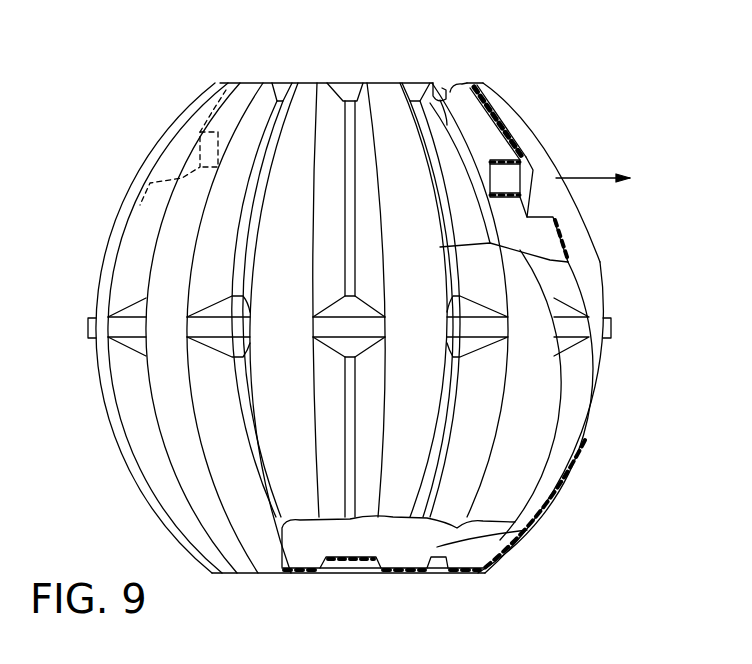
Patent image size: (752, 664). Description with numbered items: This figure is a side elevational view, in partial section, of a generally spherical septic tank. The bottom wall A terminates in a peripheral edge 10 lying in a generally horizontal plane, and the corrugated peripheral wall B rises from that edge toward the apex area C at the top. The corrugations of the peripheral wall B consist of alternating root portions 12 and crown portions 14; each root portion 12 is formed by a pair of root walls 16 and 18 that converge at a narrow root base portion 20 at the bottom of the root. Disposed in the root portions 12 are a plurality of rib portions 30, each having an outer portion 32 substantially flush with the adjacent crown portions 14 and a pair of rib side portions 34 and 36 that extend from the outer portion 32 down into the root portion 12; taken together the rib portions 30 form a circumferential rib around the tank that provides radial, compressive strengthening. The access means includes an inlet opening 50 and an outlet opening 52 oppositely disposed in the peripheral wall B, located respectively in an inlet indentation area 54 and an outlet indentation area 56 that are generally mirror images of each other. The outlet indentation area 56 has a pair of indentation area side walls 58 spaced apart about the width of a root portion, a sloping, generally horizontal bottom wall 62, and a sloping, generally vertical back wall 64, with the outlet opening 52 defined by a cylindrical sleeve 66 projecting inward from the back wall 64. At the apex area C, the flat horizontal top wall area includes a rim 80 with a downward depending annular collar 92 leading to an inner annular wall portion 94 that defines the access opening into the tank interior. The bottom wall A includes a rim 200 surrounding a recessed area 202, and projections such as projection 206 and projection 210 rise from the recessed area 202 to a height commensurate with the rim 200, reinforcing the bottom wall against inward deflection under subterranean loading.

The peripheral edge 10 is at (220, 578).
The root portion 12 is at (136, 385).
The crown portion 14 is at (175, 432).
The root wall 16 is at (226, 407).
The root wall 18 is at (247, 380).
The root base portion 20 is at (245, 415).
The rib portion 30 is at (474, 329).
The outer portion 32 is at (492, 327).
The rib side portion 34 is at (477, 307).
The rib side portion 36 is at (473, 343).
The inlet opening 50 is at (178, 151).
The outlet opening 52 is at (516, 178).
The inlet indentation area 54 is at (179, 104).
The outlet indentation area 56 is at (495, 92).
The indentation area side wall 58 is at (533, 157).
The bottom wall 62 is at (552, 203).
The back wall 64 is at (497, 137).
The cylindrical sleeve 66 is at (502, 159).
The rim 80 is at (465, 84).
The annular collar 92 is at (445, 120).
The annular wall portion 94 is at (438, 98).
The rim 200 is at (473, 570).
The recessed area 202 is at (358, 557).
The projection 206 is at (303, 562).
The projection 210 is at (402, 573).
The bottom wall A is at (306, 577).
The peripheral wall B is at (106, 223).
The apex area C is at (431, 56).